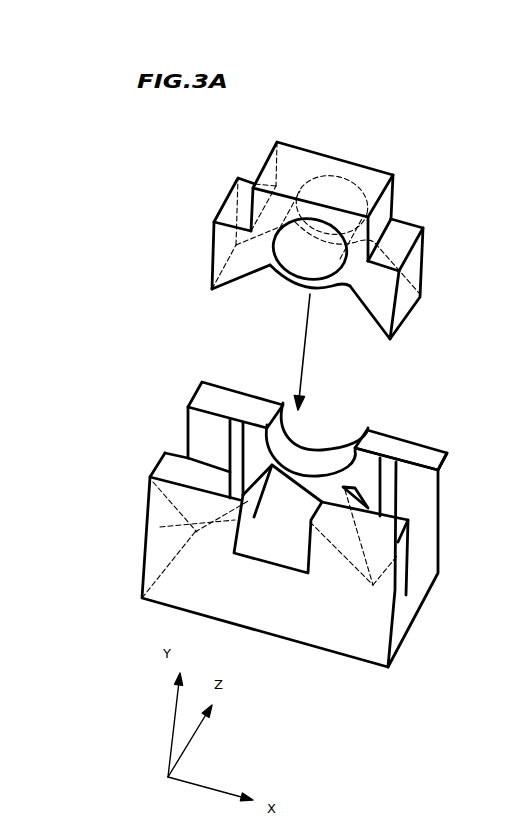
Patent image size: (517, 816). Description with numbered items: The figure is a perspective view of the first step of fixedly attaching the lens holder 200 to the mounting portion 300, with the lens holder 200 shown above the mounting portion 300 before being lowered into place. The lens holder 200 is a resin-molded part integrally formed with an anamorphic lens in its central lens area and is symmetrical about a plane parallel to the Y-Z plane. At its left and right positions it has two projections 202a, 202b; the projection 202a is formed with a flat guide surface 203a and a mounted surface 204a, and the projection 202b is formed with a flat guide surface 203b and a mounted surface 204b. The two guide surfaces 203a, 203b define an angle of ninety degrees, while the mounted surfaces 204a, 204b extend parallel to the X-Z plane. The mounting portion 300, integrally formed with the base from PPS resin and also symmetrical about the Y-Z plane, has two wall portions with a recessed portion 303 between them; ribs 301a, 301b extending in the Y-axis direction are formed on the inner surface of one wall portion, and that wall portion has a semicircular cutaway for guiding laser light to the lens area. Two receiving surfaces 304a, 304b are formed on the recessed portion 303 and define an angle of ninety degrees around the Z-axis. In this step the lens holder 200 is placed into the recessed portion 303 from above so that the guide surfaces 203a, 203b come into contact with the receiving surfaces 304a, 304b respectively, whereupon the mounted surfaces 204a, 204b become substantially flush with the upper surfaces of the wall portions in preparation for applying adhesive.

The lens holder 200 is at (317, 231).
The projection 202a is at (220, 246).
The projection 202b is at (407, 281).
The guide surface 203a is at (234, 282).
The guide surface 203b is at (368, 315).
The mounted surface 204a is at (222, 198).
The mounted surface 204b is at (400, 238).
The mounting portion 300 is at (314, 542).
The rib 301a is at (231, 447).
The rib 301b is at (388, 463).
The recessed portion 303 is at (444, 543).
The receiving surface 304a is at (249, 464).
The receiving surface 304b is at (357, 487).